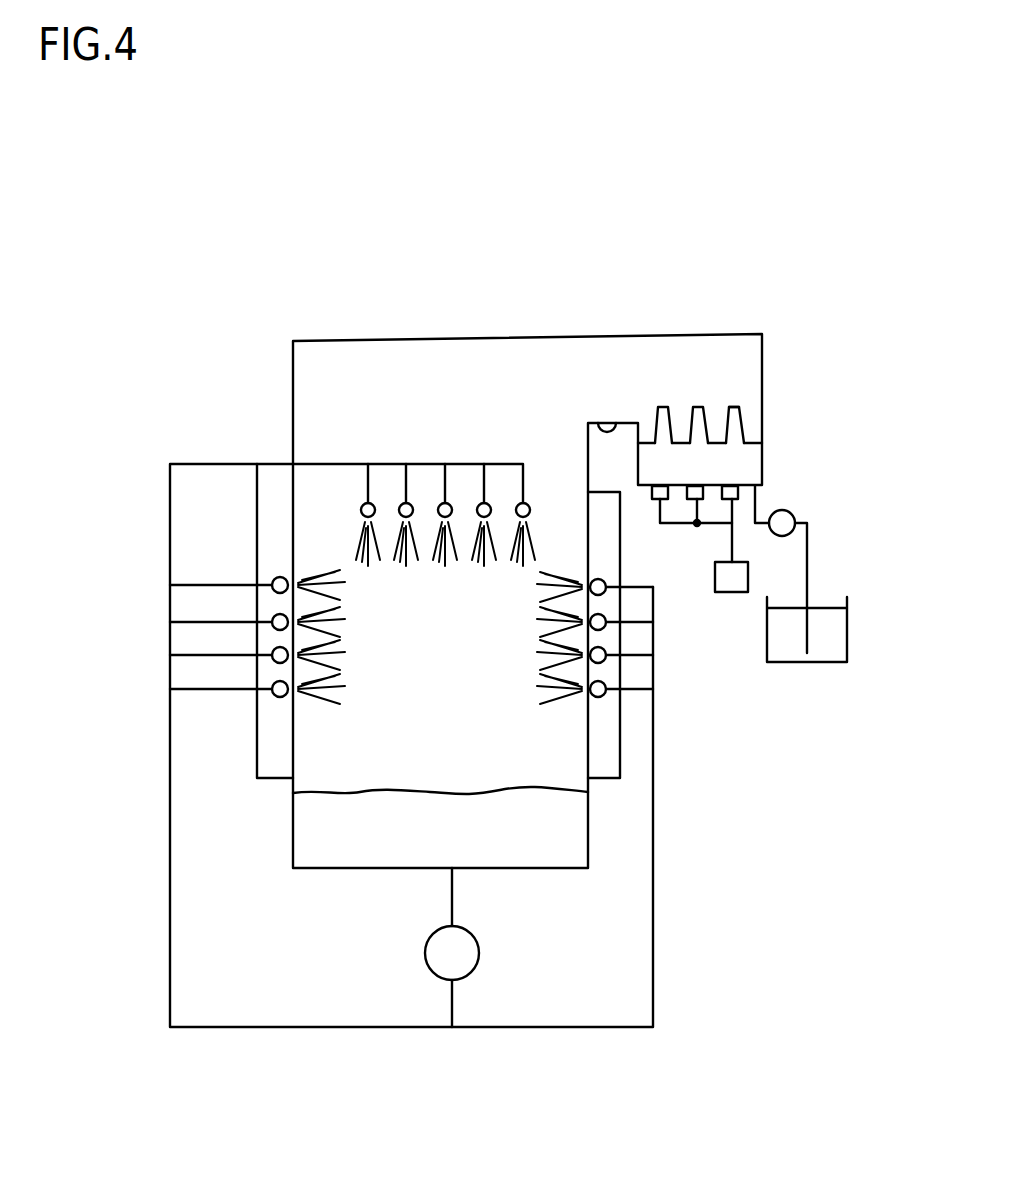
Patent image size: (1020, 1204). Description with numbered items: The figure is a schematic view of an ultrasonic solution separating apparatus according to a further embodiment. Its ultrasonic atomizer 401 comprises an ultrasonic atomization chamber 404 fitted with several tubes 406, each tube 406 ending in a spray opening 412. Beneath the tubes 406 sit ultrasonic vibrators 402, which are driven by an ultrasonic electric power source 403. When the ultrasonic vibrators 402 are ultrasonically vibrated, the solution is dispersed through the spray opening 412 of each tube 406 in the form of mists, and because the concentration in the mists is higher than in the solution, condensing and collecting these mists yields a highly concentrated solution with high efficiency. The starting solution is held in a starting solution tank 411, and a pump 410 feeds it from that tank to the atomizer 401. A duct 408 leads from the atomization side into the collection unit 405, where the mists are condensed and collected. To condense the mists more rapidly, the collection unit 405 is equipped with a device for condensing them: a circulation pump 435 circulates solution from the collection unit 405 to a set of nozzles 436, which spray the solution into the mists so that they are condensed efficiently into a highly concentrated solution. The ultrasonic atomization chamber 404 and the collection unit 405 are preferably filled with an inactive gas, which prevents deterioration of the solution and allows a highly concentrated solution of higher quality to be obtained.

The ultrasonic atomizer 401 is at (680, 565).
The ultrasonic vibrator 402 is at (733, 492).
The ultrasonic electric power source 403 is at (733, 592).
The ultrasonic atomization chamber 404 is at (762, 378).
The collection unit 405 is at (352, 777).
The tube 406 is at (729, 425).
The duct 408 is at (588, 441).
The pump 410 is at (795, 517).
The starting solution tank 411 is at (849, 631).
The spray opening 412 is at (737, 405).
The circulation pump 435 is at (480, 950).
The nozzle 436 is at (366, 503).